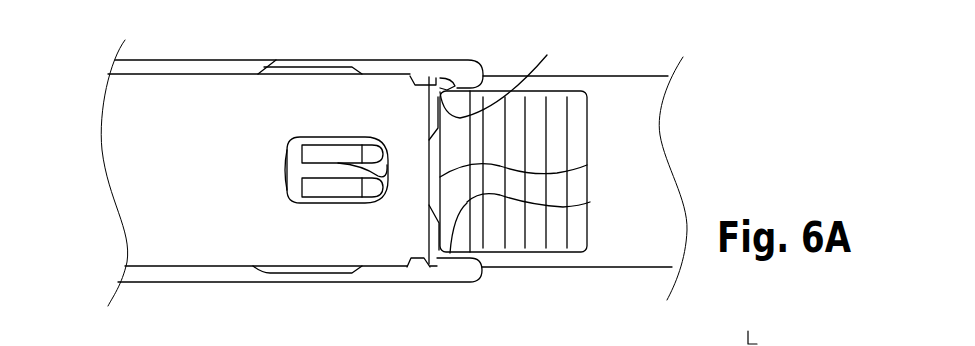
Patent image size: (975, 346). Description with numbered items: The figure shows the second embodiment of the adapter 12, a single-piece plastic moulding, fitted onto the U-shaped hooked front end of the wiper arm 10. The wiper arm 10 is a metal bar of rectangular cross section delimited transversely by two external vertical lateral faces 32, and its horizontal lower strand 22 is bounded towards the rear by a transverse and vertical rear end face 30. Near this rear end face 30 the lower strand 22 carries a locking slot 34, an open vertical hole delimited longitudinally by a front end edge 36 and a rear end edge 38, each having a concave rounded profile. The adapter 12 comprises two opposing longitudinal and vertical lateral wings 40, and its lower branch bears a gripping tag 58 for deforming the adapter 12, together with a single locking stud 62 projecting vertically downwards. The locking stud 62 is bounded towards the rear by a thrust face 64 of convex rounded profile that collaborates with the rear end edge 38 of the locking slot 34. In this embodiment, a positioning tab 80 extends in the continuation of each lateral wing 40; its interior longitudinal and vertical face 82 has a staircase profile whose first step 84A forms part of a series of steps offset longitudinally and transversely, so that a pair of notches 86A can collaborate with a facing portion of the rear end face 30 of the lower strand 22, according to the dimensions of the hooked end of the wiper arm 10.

The wiper arm 10 is at (687, 115).
The adapter 12 is at (230, 293).
The lower strand 22 is at (222, 223).
The rear end face 30 is at (587, 165).
The external vertical lateral faces 32 is at (277, 57).
The locking slot 34 is at (293, 185).
The front end edge 36 is at (293, 143).
The rear end edge 38 is at (333, 143).
The lateral wings 40 is at (163, 58).
The gripping tag 58 is at (578, 230).
The locking stud 62 is at (320, 190).
The thrust face 64 is at (385, 176).
The positioning tab 80 is at (452, 57).
The interior longitudinal and vertical face 82 is at (590, 202).
The step 84A is at (436, 314).
The pair of notches 86A is at (415, 78).